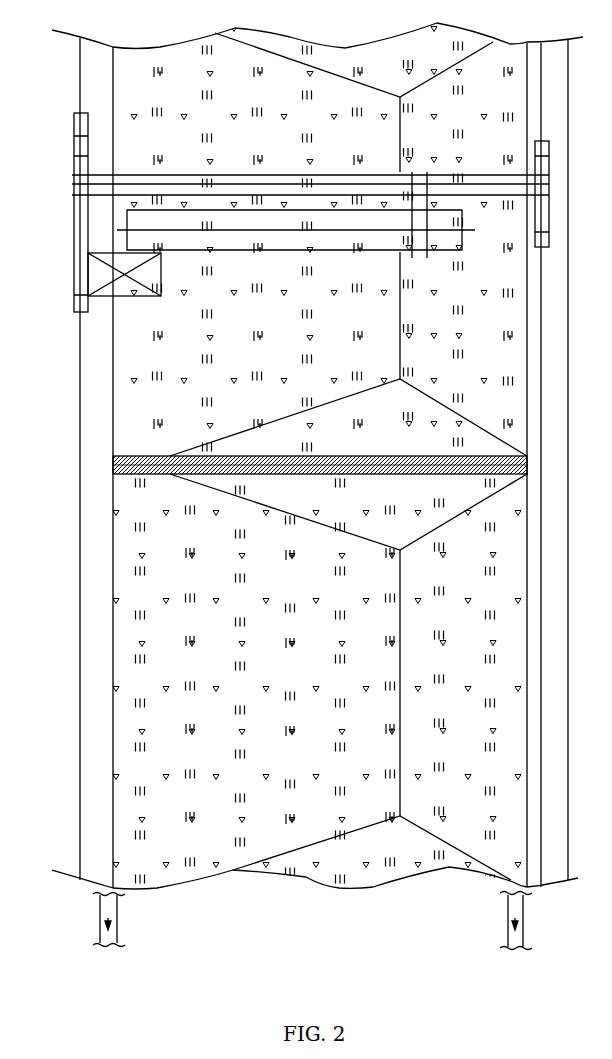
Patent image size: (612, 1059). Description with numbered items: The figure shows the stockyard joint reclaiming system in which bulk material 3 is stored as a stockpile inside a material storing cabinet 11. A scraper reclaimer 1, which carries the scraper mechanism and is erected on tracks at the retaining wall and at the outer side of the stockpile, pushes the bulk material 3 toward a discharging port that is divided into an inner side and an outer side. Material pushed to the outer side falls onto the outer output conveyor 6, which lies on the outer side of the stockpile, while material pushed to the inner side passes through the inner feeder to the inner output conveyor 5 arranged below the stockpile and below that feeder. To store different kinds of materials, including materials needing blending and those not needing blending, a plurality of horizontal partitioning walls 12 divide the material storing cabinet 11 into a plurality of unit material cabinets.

The scraper reclaimer 1 is at (83, 248).
The bulk material 3 is at (143, 382).
The inner output conveyor 5 is at (525, 915).
The outer output conveyor 6 is at (105, 920).
The material storing cabinet 11 is at (128, 430).
The horizontal partitioning wall 12 is at (113, 465).